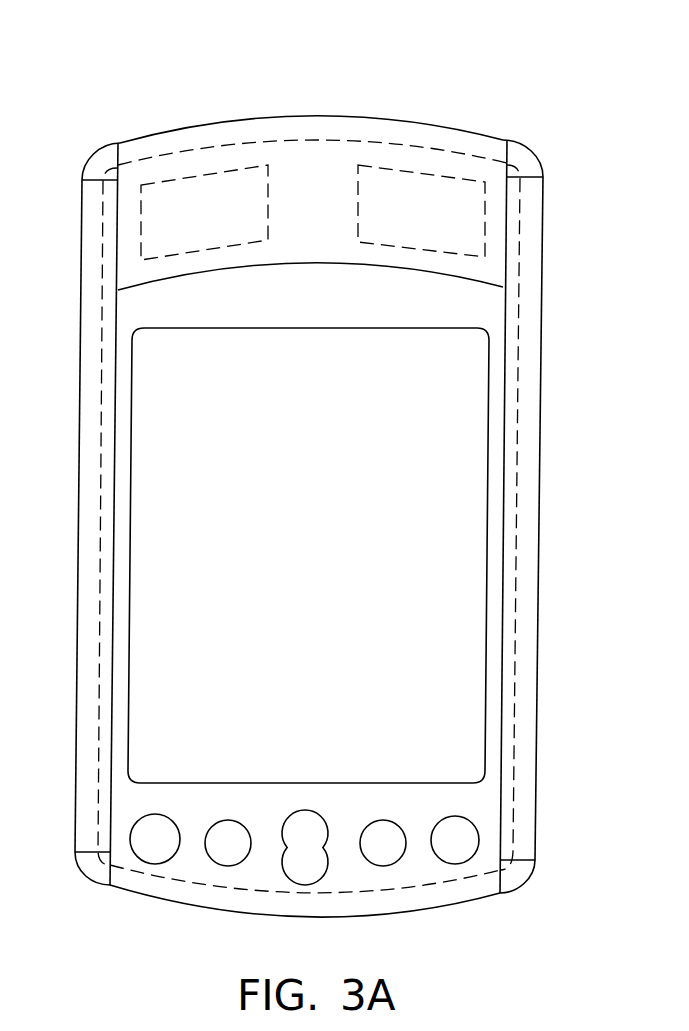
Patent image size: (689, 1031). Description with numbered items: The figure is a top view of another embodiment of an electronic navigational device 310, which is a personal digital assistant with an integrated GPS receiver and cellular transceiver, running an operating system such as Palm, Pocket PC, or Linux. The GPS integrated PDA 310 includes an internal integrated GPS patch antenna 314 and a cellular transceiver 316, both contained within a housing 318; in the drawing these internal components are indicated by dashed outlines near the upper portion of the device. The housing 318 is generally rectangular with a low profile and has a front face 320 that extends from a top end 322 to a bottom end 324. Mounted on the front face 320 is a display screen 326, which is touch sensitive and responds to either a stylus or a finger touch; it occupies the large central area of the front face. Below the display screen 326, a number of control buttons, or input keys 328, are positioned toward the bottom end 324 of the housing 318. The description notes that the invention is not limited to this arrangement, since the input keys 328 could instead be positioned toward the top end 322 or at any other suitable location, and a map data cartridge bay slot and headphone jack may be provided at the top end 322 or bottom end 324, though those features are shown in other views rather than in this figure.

The electronic navigational device 310 is at (314, 483).
The internal integrated GPS patch antenna 314 is at (205, 183).
The cellular transceiver 316 is at (414, 193).
The housing 318 is at (82, 285).
The front face 320 is at (133, 320).
The top end 322 is at (336, 117).
The bottom end 324 is at (412, 910).
The display screen 326 is at (445, 579).
The input keys 328 is at (147, 872).